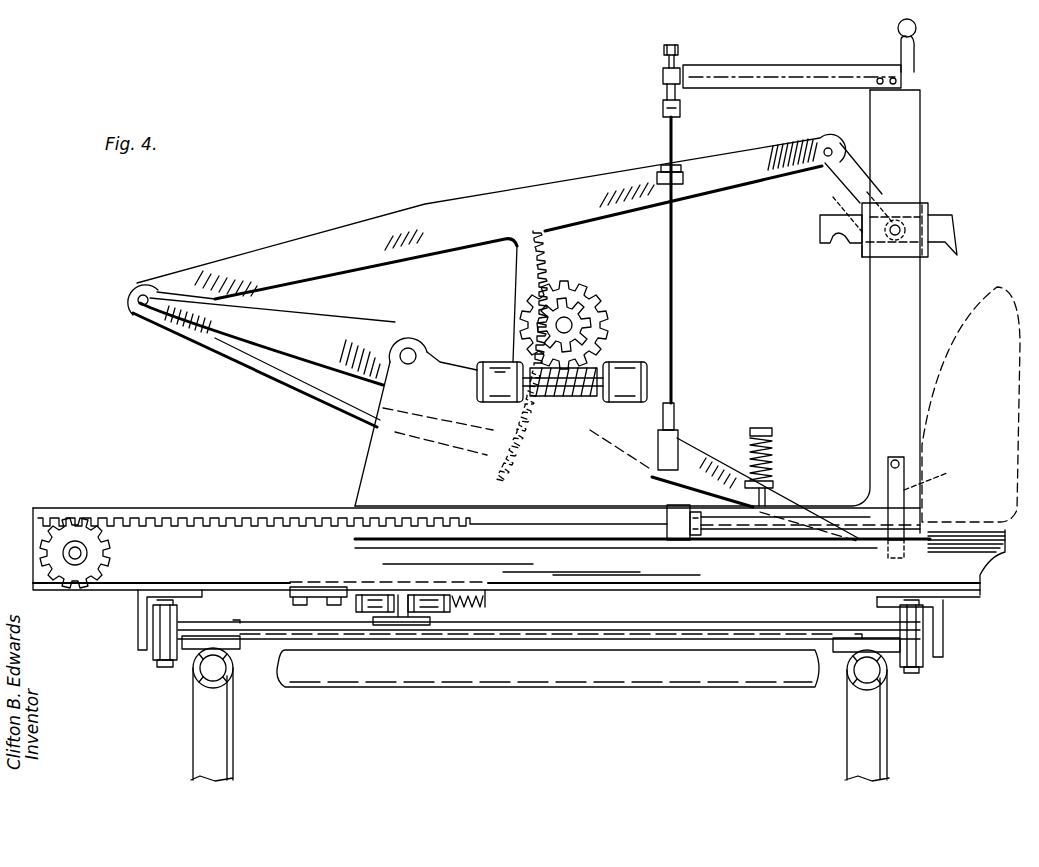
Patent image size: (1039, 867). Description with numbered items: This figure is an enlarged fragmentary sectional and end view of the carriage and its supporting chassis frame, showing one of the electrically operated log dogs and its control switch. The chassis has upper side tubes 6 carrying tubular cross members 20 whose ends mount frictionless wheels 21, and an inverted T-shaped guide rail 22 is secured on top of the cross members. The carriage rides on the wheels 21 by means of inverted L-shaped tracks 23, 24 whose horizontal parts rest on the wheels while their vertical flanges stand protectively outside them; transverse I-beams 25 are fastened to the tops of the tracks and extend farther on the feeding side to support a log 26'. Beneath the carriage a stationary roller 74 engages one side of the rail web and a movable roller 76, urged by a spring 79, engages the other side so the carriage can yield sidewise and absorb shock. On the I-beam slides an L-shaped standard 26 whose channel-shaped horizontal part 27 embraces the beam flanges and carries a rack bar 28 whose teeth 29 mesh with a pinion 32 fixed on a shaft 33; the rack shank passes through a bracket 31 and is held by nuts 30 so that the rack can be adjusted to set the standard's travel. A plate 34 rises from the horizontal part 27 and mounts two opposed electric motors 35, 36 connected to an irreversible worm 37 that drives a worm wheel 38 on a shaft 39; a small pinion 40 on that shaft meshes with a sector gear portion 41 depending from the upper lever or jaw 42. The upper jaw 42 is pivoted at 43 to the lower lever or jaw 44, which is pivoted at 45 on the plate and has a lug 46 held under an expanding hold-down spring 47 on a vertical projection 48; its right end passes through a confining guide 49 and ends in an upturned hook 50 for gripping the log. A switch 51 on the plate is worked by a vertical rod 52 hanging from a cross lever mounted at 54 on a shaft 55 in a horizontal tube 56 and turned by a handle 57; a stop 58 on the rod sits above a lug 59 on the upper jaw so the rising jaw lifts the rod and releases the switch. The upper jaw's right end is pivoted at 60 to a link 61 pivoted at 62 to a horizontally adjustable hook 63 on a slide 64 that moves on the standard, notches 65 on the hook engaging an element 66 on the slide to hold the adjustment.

The upper side tubes 6 is at (230, 684).
The tubular cross members 20 is at (600, 626).
The frictionless wheels 21 is at (168, 668).
The inverted T-shaped rail 22 is at (440, 625).
The inverted L-shaped track 23 is at (138, 628).
The inverted L-shaped track 24 is at (945, 652).
The I-beams 25 is at (768, 588).
The L-shaped standard or knee 26 is at (878, 311).
The log 26' is at (973, 378).
The channel-shaped horizontal lower part 27 is at (755, 530).
The horizontal rack bar 28 is at (234, 508).
The teeth 29 is at (428, 527).
The nuts 30 is at (705, 530).
The bracket 31 is at (677, 497).
The pinions 32 is at (110, 556).
The shaft 33 is at (75, 565).
The plate 34 is at (360, 463).
The electric motor 35 is at (480, 376).
The electric motor 36 is at (636, 378).
The irreversible worm 37 is at (562, 398).
The worm wheel 38 is at (600, 312).
The shaft 39 is at (568, 320).
The small pinion 40 is at (573, 325).
The sector gear portion 41 is at (517, 277).
The upper lever or jaw 42 is at (526, 192).
The pivot 43 is at (148, 293).
The lower lever or jaw 44 is at (375, 318).
The pivot 45 is at (414, 345).
The lug 46 is at (776, 482).
The hold-down spring 47 is at (770, 455).
The vertical projection 48 is at (765, 428).
The confining guide 49 is at (928, 507).
The upturned point or hook 50 is at (962, 522).
The switch 51 is at (681, 422).
The vertical rod 52 is at (675, 264).
The pivot mounting 54 is at (662, 76).
The shaft 55 is at (795, 72).
The horizontal tube 56 is at (850, 70).
The handle 57 is at (663, 98).
The stop 58 is at (684, 172).
The lug 59 is at (686, 180).
The pivot 60 is at (833, 141).
The link 61 is at (872, 178).
The pivot 62 is at (897, 220).
The horizontally adjustable hook 63 is at (958, 236).
The slide 64 is at (867, 255).
The notches 65 is at (830, 240).
The element 66 is at (850, 202).
The stationary roller 74 is at (355, 602).
The movable roller 76 is at (450, 606).
The spring 79 is at (490, 598).